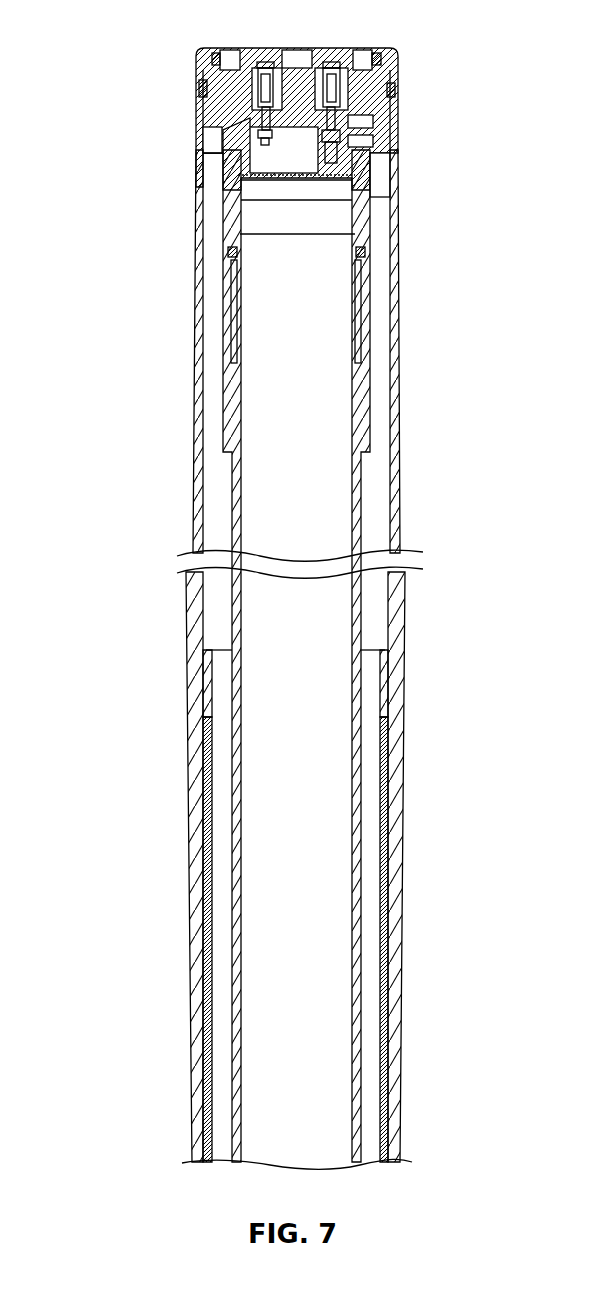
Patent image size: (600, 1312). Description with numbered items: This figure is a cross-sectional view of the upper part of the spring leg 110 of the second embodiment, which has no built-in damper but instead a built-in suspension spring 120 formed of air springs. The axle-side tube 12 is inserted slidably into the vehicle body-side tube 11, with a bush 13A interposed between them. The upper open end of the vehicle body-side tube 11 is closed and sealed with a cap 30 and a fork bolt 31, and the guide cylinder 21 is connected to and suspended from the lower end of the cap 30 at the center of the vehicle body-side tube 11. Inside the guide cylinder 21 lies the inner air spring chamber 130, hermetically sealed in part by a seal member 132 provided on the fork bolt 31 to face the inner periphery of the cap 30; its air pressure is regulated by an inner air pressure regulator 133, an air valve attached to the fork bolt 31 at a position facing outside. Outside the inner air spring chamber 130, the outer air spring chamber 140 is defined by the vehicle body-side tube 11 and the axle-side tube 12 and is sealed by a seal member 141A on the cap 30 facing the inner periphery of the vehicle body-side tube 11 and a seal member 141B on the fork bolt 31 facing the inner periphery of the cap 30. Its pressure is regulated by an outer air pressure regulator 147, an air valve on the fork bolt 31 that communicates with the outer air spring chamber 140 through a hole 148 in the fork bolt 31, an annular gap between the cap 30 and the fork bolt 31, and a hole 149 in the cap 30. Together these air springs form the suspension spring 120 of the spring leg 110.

The spring leg 110 is at (270, 277).
The vehicle body-side tube 11 is at (195, 280).
The axle-side tube 12 is at (203, 1126).
The bush 13A is at (206, 740).
The guide cylinder 21 is at (232, 487).
The cap 30 is at (200, 49).
The fork bolt 31 is at (197, 107).
The seal member 132 is at (224, 165).
The inner air pressure regulator 133 is at (231, 70).
The seal member 141A is at (378, 86).
The seal member 141B is at (398, 52).
The outer air pressure regulator 147 is at (336, 90).
The hole 148 is at (383, 153).
The hole 149 is at (348, 142).
The suspension spring 120 is at (330, 318).
The inner air spring chamber 130 is at (318, 340).
The outer air spring chamber 140 is at (372, 588).